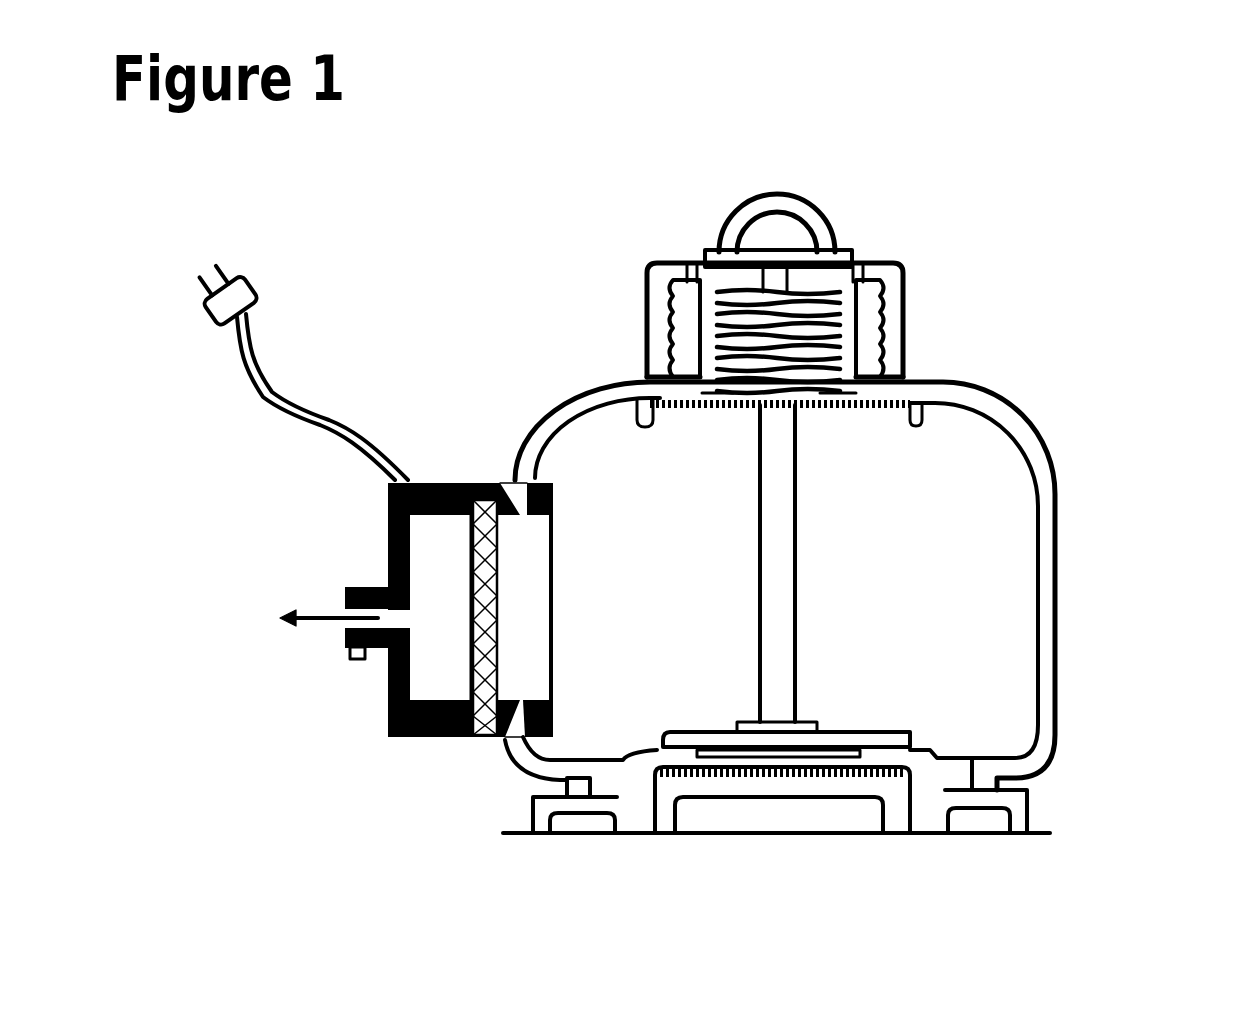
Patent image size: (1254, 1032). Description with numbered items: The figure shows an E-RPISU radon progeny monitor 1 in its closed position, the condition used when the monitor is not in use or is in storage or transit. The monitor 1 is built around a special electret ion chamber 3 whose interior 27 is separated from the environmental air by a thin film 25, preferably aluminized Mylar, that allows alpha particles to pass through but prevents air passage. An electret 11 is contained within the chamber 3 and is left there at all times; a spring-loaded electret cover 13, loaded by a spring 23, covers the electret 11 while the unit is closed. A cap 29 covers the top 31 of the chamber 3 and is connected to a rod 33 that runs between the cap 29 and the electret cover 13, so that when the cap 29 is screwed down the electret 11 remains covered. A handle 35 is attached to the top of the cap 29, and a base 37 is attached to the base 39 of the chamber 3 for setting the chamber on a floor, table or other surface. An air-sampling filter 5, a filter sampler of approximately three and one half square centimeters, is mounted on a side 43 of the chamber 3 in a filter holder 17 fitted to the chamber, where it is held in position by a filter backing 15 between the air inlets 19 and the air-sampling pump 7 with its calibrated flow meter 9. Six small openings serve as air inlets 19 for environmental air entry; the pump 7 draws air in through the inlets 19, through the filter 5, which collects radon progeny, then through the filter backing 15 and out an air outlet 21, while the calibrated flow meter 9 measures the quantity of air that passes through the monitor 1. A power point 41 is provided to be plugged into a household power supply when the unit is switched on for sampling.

The radon progeny monitor 1 is at (1040, 353).
The electret ion chamber 3 is at (1033, 437).
The air-sampling filter 5 is at (516, 645).
The air-sampling pump 7 is at (373, 587).
The calibrated air flow meter 9 is at (353, 653).
The electret 11 is at (879, 743).
The electret cover 13 is at (844, 713).
The filter backing 15 is at (456, 679).
The filter holder 17 is at (374, 530).
The air inlet 19 is at (500, 740).
The air outlet 21 is at (345, 603).
The spring 23 is at (910, 292).
The thin film 25 is at (568, 563).
The interior 27 is at (1020, 713).
The cap 29 is at (645, 288).
The top 31 is at (883, 392).
The rod 33 is at (757, 530).
The handle 35 is at (825, 213).
The base 37 is at (1030, 808).
The base of the chamber 39 is at (672, 790).
The power point 41 is at (258, 283).
The side 43 is at (528, 433).